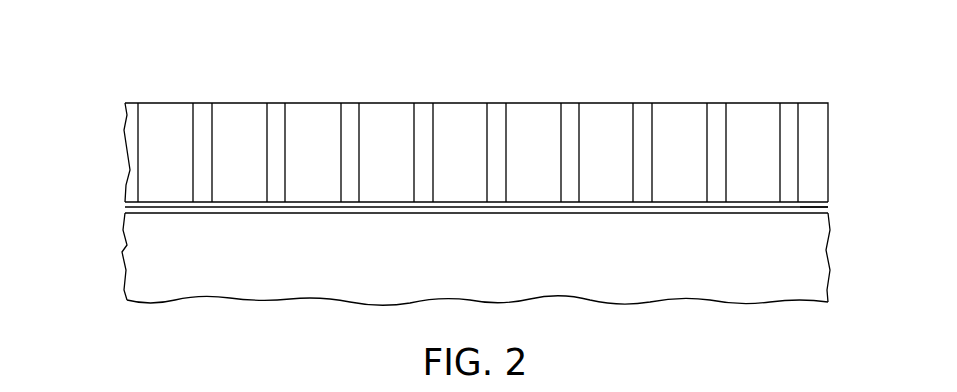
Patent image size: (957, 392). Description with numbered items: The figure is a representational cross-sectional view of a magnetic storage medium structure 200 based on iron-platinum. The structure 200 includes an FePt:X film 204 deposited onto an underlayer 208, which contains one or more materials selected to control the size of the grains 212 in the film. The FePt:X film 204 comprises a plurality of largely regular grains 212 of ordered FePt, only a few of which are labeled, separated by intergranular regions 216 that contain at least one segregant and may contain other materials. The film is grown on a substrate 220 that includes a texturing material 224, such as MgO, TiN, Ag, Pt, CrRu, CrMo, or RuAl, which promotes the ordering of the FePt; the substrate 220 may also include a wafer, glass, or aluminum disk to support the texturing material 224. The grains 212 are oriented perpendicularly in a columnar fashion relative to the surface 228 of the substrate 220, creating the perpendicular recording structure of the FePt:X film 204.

The magnetic storage medium structure 200 is at (778, 38).
The FePt:X film 204 is at (104, 103).
The underlayer 208 is at (125, 202).
The grains 212 is at (170, 113).
The intergranular regions 216 is at (207, 113).
The substrate 220 is at (122, 251).
The texturing material 224 is at (125, 213).
The surface 228 is at (808, 198).